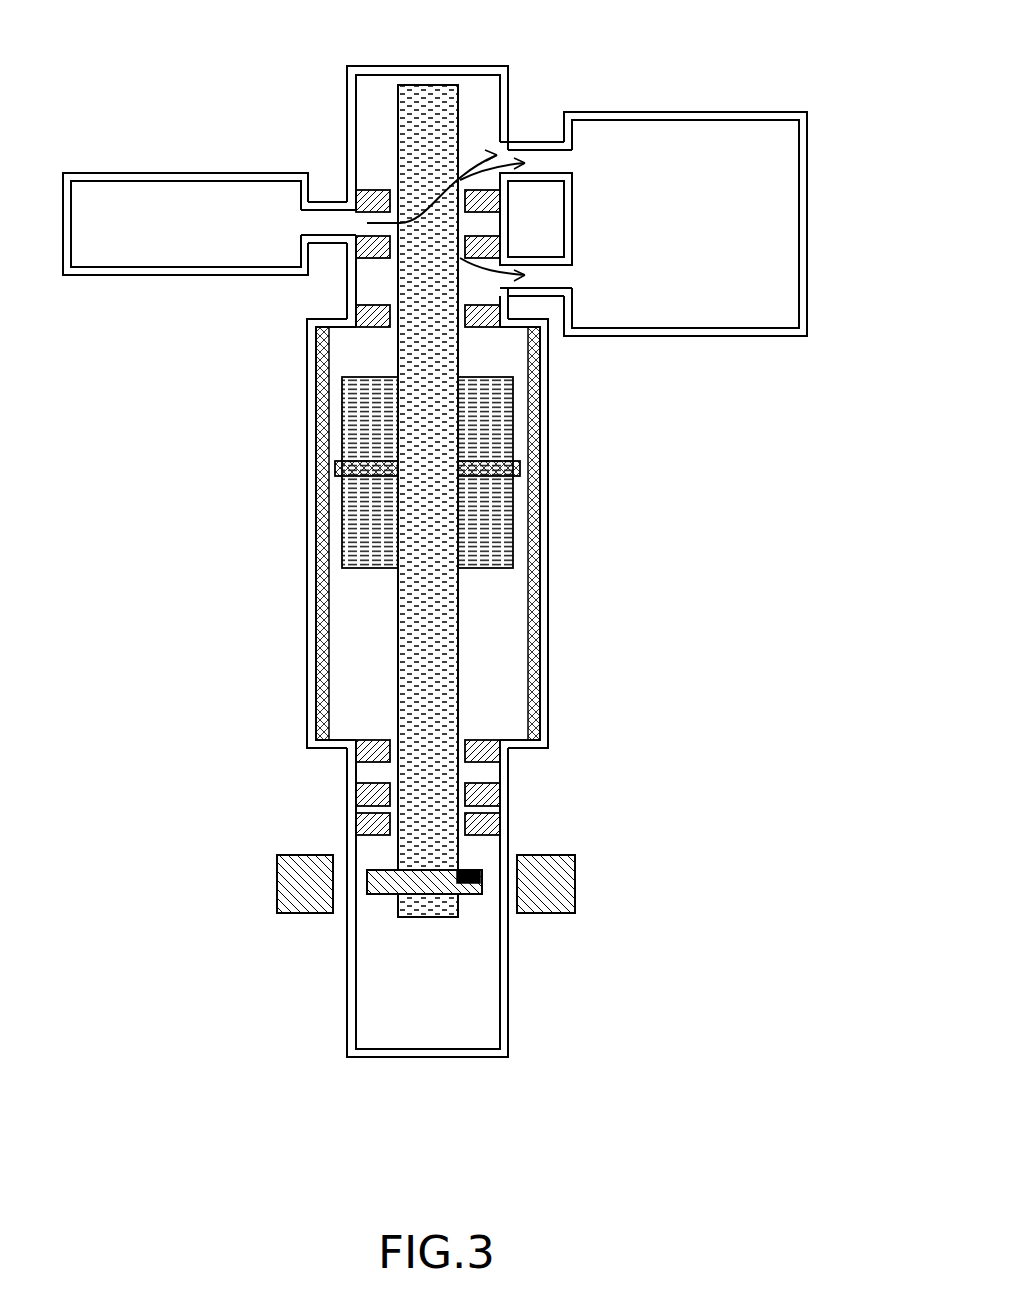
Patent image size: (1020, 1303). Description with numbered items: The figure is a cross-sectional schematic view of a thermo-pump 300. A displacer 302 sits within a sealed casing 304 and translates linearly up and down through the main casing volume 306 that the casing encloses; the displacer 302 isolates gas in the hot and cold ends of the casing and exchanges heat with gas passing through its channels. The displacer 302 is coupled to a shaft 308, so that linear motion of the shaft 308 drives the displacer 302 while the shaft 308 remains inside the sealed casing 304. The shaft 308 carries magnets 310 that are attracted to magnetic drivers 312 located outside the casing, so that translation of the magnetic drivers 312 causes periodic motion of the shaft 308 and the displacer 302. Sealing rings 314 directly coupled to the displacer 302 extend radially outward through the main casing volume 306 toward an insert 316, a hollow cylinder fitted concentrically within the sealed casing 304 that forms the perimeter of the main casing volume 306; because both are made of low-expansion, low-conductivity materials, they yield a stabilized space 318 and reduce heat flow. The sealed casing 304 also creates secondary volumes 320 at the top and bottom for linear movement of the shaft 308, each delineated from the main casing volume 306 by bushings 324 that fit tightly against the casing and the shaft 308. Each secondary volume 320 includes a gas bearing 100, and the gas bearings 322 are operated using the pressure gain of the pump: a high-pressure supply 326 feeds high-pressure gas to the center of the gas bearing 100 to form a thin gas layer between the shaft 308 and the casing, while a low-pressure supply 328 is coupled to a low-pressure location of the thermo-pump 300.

The gas bearing 100 is at (483, 252).
The thermo-pump 300 is at (455, 20).
The displacer 302 is at (500, 520).
The sealed casing 304 is at (549, 427).
The main casing volume 306 is at (343, 707).
The shaft 308 is at (398, 903).
The magnets 310 is at (470, 895).
The magnetic drivers 312 is at (277, 882).
The sealing rings 314 is at (345, 469).
The insert 316 is at (533, 481).
The stabilized space 318 is at (336, 417).
The secondary volumes 320 is at (483, 68).
The gas bearings 322 is at (484, 793).
The bushings 324 is at (373, 328).
The high-pressure supply 326 is at (185, 190).
The low-pressure supply 328 is at (683, 132).